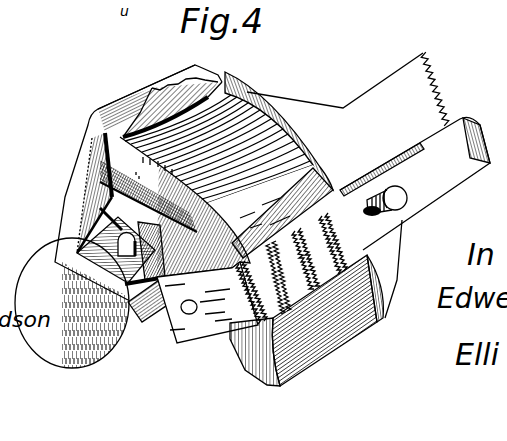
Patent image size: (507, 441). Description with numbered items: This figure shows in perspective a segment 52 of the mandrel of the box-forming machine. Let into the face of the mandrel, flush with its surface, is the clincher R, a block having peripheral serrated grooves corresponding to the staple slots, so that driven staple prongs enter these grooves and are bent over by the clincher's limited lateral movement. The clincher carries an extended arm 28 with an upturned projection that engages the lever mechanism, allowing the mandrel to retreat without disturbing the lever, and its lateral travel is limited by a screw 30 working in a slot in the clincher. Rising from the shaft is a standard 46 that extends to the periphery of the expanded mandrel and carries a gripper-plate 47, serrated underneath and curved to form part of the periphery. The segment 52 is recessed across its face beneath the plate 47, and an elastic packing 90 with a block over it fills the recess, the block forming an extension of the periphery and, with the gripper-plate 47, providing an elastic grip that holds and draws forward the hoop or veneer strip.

The extended arm 28 is at (463, 167).
The screw 30 is at (396, 187).
The standard 46 is at (87, 175).
The gripper-plate 47 is at (140, 100).
The segment of the mandrel 52 is at (216, 174).
The elastic packing 90 is at (121, 241).
The clincher R is at (212, 322).